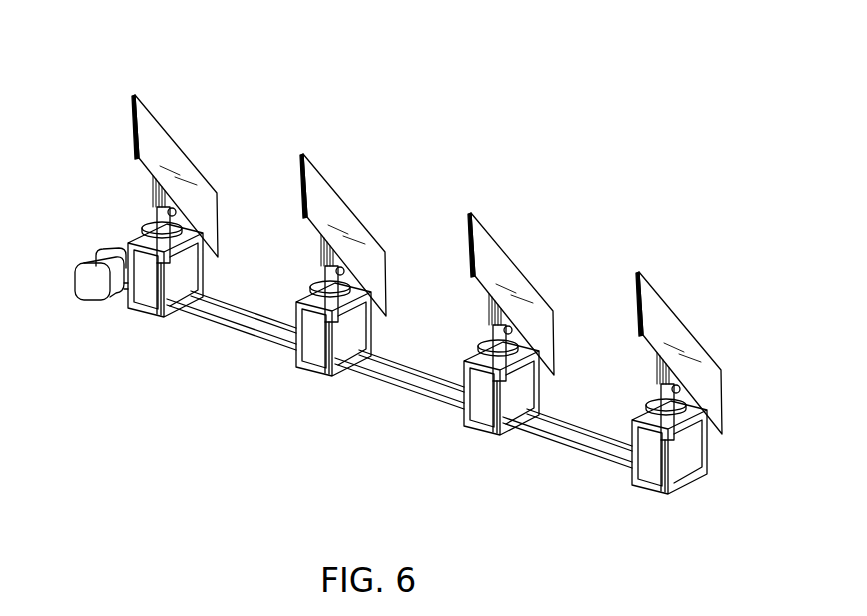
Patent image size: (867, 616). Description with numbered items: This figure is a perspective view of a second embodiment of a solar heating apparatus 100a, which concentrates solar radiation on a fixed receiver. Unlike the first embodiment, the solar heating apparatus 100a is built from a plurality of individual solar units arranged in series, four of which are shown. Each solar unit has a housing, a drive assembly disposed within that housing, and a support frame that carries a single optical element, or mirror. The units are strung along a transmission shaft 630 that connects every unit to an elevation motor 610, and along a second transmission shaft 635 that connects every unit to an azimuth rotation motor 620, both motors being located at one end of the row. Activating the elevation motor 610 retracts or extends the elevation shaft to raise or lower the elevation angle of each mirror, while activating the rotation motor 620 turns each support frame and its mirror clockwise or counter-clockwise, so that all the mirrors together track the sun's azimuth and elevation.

The solar heating apparatus 100a is at (618, 65).
The elevation motor 610 is at (94, 252).
The azimuth rotation motor 620 is at (83, 300).
The transmission shaft 630 is at (240, 305).
The transmission shaft 635 is at (226, 328).